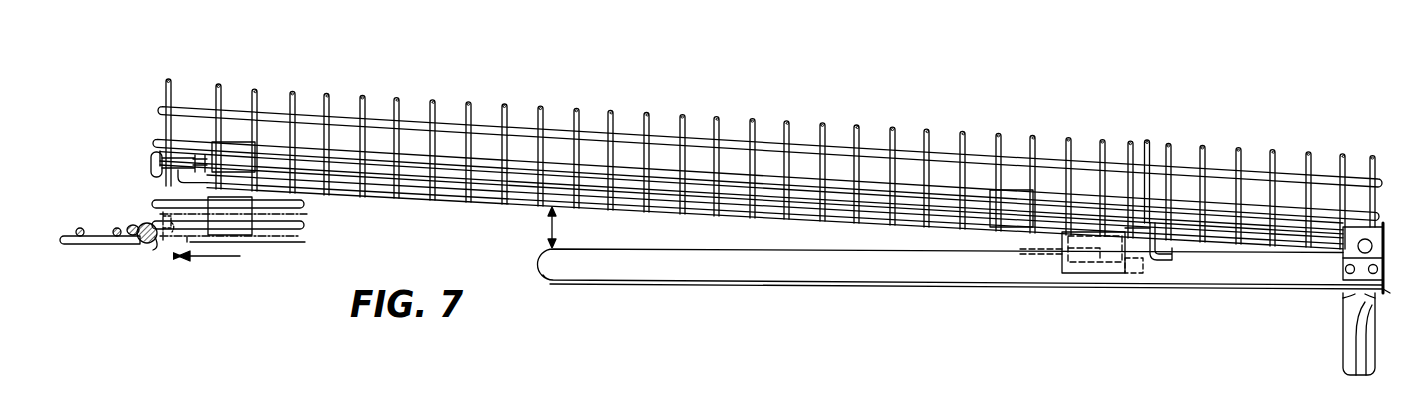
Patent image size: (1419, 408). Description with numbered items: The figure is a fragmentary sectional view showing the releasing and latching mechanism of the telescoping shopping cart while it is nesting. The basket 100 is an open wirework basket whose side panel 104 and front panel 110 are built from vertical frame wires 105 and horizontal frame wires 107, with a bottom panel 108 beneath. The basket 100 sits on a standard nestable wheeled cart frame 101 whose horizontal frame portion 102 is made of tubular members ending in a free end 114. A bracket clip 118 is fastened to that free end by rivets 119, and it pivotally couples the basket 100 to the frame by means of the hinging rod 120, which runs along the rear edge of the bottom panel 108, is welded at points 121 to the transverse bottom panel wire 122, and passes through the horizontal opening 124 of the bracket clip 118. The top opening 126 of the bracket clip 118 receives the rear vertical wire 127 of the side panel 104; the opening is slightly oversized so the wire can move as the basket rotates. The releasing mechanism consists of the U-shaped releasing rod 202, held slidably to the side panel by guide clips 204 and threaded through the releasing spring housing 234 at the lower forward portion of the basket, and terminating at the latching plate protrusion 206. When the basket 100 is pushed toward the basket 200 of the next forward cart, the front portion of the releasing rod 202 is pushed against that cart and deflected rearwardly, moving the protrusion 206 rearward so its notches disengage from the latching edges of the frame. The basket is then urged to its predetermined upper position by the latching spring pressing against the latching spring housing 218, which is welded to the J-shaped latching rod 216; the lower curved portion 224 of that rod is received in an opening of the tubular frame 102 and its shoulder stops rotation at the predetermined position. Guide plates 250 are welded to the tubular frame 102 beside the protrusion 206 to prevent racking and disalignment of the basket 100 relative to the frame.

The basket 100 is at (768, 165).
The wheeled cart frame 101 is at (1407, 337).
The horizontal frame portion 102 is at (961, 285).
The side panel 104 is at (842, 145).
The vertical frame wires 105 is at (690, 130).
The horizontal frame wires 107 is at (443, 160).
The bottom panel 108 is at (640, 212).
The front panel 110 is at (160, 95).
The free end 114 is at (1282, 270).
The bracket clip 118 is at (1381, 227).
The rivets 119 is at (1386, 290).
The hinging rod 120 is at (147, 243).
The weld points 121 is at (143, 224).
The transverse bottom panel wire 122 is at (137, 227).
The horizontal opening 124 is at (1384, 233).
The top opening 126 is at (1373, 246).
The rear vertical wire 127 is at (1376, 172).
The basket of the next forward cart 200 is at (71, 234).
The releasing rod 202 is at (287, 220).
The guide clips 204 is at (240, 147).
The latching plate protrusion 206 is at (1090, 277).
The J-shaped latching rod 216 is at (1147, 140).
The latching spring housing 218 is at (1150, 223).
The lower curved portion 224 is at (1143, 270).
The releasing spring housing 234 is at (157, 157).
The guide plates 250 is at (1063, 278).